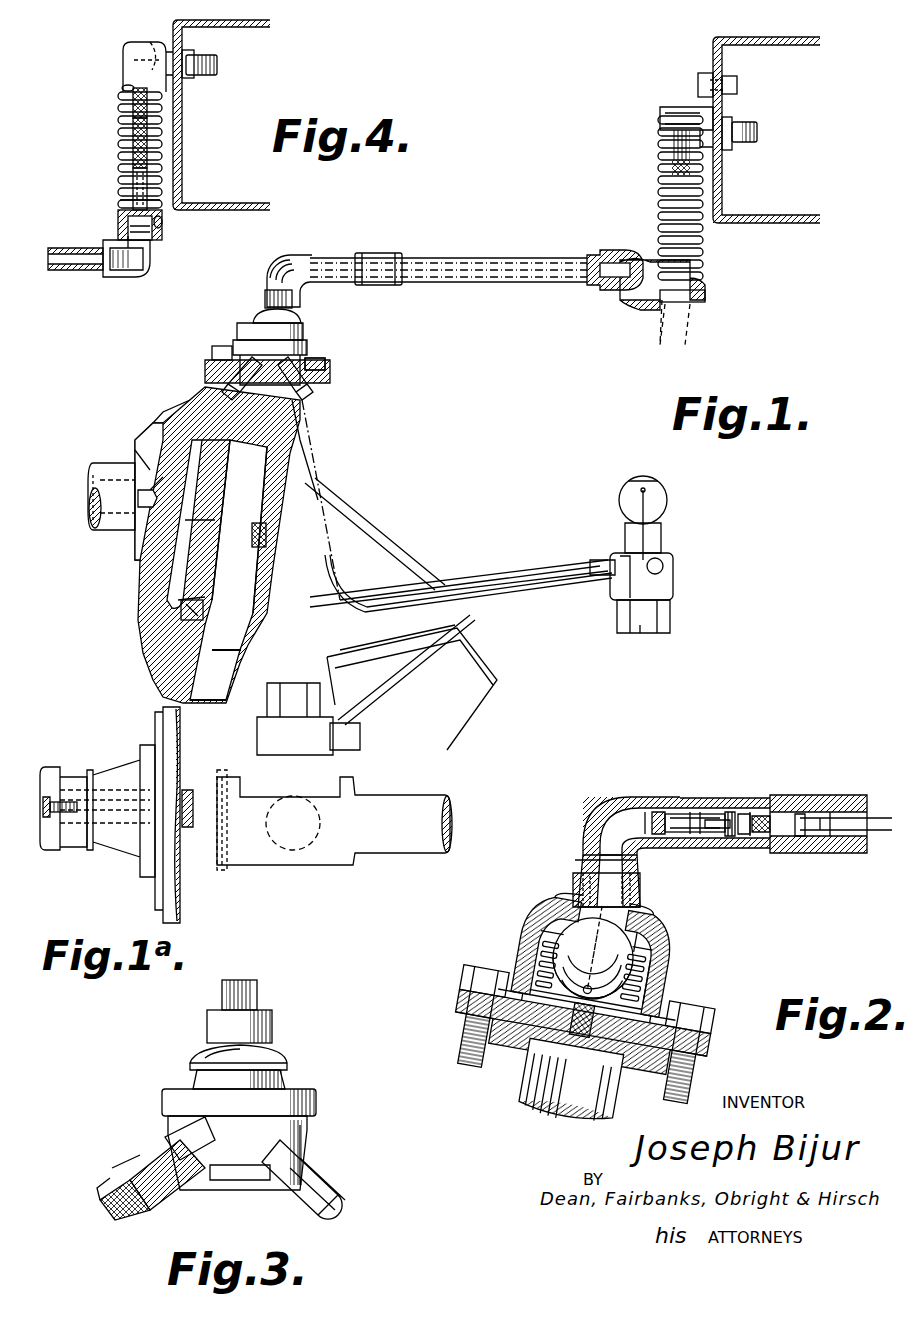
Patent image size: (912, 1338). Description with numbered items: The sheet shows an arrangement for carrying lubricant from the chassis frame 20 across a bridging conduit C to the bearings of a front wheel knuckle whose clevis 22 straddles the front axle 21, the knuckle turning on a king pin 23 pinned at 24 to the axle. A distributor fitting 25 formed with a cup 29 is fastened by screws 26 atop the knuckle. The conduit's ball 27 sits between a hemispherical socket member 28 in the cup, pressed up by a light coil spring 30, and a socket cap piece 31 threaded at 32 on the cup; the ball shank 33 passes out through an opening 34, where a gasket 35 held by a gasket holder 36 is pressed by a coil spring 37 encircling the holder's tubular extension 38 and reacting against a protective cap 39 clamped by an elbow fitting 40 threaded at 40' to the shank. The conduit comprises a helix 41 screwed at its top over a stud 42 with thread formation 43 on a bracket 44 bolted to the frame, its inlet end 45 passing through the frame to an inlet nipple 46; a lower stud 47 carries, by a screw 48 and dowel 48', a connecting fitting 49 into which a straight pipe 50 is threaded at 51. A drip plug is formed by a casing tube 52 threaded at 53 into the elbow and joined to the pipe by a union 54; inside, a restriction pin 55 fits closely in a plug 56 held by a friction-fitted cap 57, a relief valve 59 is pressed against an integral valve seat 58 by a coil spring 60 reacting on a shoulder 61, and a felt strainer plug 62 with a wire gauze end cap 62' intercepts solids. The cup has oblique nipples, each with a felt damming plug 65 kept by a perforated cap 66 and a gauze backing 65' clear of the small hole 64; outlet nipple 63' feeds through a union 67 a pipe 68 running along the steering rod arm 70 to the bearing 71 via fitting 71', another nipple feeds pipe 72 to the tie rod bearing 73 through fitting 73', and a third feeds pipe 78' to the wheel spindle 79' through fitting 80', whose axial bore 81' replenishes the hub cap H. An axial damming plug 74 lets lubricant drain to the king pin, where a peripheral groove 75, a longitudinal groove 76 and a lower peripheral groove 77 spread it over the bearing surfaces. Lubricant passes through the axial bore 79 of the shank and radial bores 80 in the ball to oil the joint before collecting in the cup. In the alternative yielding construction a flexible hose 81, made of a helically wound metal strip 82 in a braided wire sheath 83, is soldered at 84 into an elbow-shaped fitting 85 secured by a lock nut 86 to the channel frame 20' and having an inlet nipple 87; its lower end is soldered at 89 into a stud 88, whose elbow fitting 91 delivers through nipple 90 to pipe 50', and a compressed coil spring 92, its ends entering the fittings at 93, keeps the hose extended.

In FIG. 1, the chassis frame 20 is at (766, 148).
In FIG. 4, the channel frame 20' is at (242, 115).
In FIG. 1, the front axle 21 is at (385, 563).
In FIG. 1, the clevis 22 is at (208, 392).
In FIG. 1, the king pin 23 is at (222, 580).
In FIG. 1, the pin 24 is at (295, 545).
In FIG. 1, the distributor fitting 25 is at (320, 360).
In FIG. 2, the distributor fitting 25 is at (660, 1040).
In FIG. 1, the screws 26 is at (326, 372).
In FIG. 2, the screws 26 is at (725, 1060).
In FIG. 2, the ball outlet 27 is at (625, 958).
In FIG. 2, the hemispherical socket member 28 is at (510, 1010).
In FIG. 2, the distributor cup 29 is at (505, 995).
In FIG. 3, the distributor cup 29 is at (237, 1153).
In FIG. 2, the light coil spring 30 is at (665, 1005).
In FIG. 1, the socket cap piece 31 is at (304, 332).
In FIG. 2, the socket cap piece 31 is at (535, 928).
In FIG. 3, the socket cap piece 31 is at (290, 1078).
In FIG. 1, the thread 32 is at (308, 347).
In FIG. 2, the thread 32 is at (515, 975).
In FIG. 3, the thread 32 is at (318, 1102).
In FIG. 2, the ball shank 33 is at (645, 932).
In FIG. 2, the opening 34 is at (660, 948).
In FIG. 2, the gasket 35 is at (520, 935).
In FIG. 1, the gasket holder 36 is at (254, 312).
In FIG. 2, the gasket holder 36 is at (553, 905).
In FIG. 3, the gasket holder 36 is at (289, 1055).
In FIG. 2, the coil spring 37 is at (578, 880).
In FIG. 2, the tubular extension 38 is at (642, 895).
In FIG. 1, the protective cap 39 is at (264, 298).
In FIG. 2, the protective cap 39 is at (574, 885).
In FIG. 3, the protective cap 39 is at (274, 1025).
In FIG. 1, the elbow connecting fitting 40 is at (285, 268).
In FIG. 2, the elbow connecting fitting 40 is at (602, 826).
In FIG. 2, the thread 40' is at (570, 865).
In FIG. 1, the helix 41 is at (662, 190).
In FIG. 1, the stud 42 is at (668, 158).
In FIG. 1, the thread formation 43 is at (690, 164).
In FIG. 1, the bracket 44 is at (705, 108).
In FIG. 1, the inlet end 45 is at (757, 126).
In FIG. 1, the inlet nipple 46 is at (734, 145).
In FIG. 1, the stud 47 is at (703, 265).
In FIG. 1, the screw 48 is at (685, 317).
In FIG. 1, the dowel 48' is at (659, 340).
In FIG. 1, the connecting fitting 49 is at (653, 302).
In FIG. 1, the connecting pipe 50 is at (448, 288).
In FIG. 2, the connecting pipe 50 is at (846, 847).
In FIG. 4, the pipe 50' is at (75, 279).
In FIG. 1, the thread 51 is at (620, 290).
In FIG. 1, the casing tube 52 is at (336, 258).
In FIG. 2, the casing tube 52 is at (720, 850).
In FIG. 2, the thread 53 is at (660, 810).
In FIG. 1, the union 54 is at (388, 255).
In FIG. 2, the union 54 is at (825, 795).
In FIG. 2, the restriction pin 55 is at (688, 848).
In FIG. 2, the plug 56 is at (680, 812).
In FIG. 2, the friction-fitted cap 57 is at (640, 810).
In FIG. 2, the valve seat 58 is at (748, 812).
In FIG. 2, the relief valve 59 is at (733, 810).
In FIG. 2, the coil spring 60 is at (752, 840).
In FIG. 2, the shoulder 61 is at (720, 812).
In FIG. 2, the strainer plug 62 is at (819, 861).
In FIG. 2, the wire gauze end cap 62' is at (779, 862).
In FIG. 1, the outlet nipple 63' is at (339, 412).
In FIG. 3, the outlet nipple 63' is at (167, 1183).
In FIG. 3, the small hole 64 is at (160, 1150).
In FIG. 3, the damming plug 65 is at (125, 1214).
In FIG. 3, the gauze backing 65' is at (106, 1151).
In FIG. 3, the perforated cap 66 is at (108, 1200).
In FIG. 1, the union 67 is at (305, 415).
In FIG. 1, the pipe 68 is at (372, 608).
In FIG. 1, the steering rod arm 70 is at (497, 588).
In FIG. 1, the bearing 71 is at (669, 518).
In FIG. 2, the bearing 71 is at (593, 952).
In FIG. 1, the fitting 71' is at (661, 593).
In FIG. 1, the pipe 72 is at (360, 692).
In FIG. 1, the tie rod bearing 73 is at (334, 776).
In FIG. 1, the fitting 73' is at (402, 682).
In FIG. 2, the axial damming plug 74 is at (580, 1065).
In FIG. 1, the peripheral groove 75 is at (195, 430).
In FIG. 1, the longitudinal groove 76 is at (220, 552).
In FIG. 1, the peripheral groove 77 is at (190, 676).
In FIG. 1, the pipe 78' is at (99, 446).
In FIG. 2, the axial bore 79 is at (517, 940).
In FIG. 1, the wheel bearing spindle 79' is at (104, 524).
In FIG. 1A, the wheel bearing spindle 79' is at (205, 786).
In FIG. 2, the radial bores 80 is at (519, 1066).
In FIG. 1, the fitting 80' is at (70, 540).
In FIG. 4, the flexible hose 81 is at (107, 156).
In FIG. 1, the axial bore 81' is at (90, 495).
In FIG. 1A, the axial bore 81' is at (139, 850).
In FIG. 4, the metal strip 82 is at (118, 232).
In FIG. 4, the braided wire sheath 83 is at (165, 203).
In FIG. 4, the solder joint 84 is at (131, 112).
In FIG. 4, the elbow-shaped fitting 85 is at (136, 65).
In FIG. 4, the lock nut 86 is at (190, 80).
In FIG. 4, the inlet nipple 87 is at (216, 66).
In FIG. 4, the stud 88 is at (158, 238).
In FIG. 4, the solder joint 89 is at (118, 204).
In FIG. 4, the nipple 90 is at (130, 260).
In FIG. 4, the elbow fitting 91 is at (120, 262).
In FIG. 4, the coil spring 92 is at (117, 146).
In FIG. 4, the spring ends 93 is at (126, 84).
In FIG. 1A, the hub cap H is at (70, 773).
In FIG. 1, the bridging conduit C is at (490, 242).